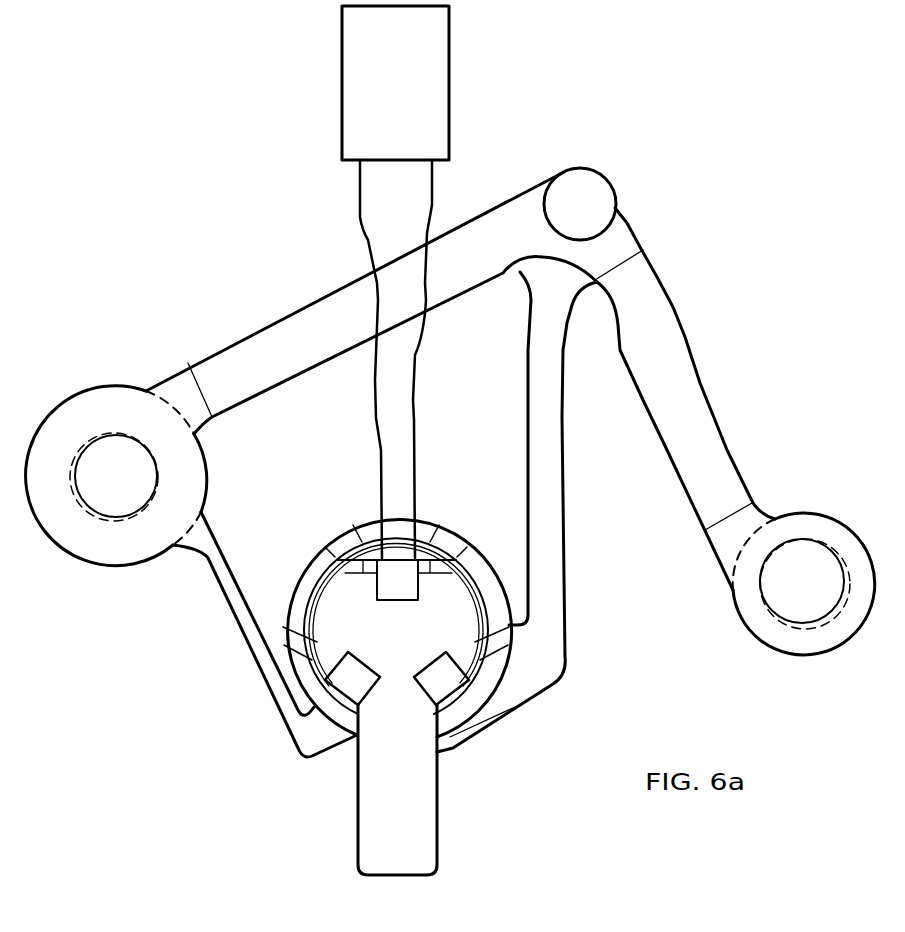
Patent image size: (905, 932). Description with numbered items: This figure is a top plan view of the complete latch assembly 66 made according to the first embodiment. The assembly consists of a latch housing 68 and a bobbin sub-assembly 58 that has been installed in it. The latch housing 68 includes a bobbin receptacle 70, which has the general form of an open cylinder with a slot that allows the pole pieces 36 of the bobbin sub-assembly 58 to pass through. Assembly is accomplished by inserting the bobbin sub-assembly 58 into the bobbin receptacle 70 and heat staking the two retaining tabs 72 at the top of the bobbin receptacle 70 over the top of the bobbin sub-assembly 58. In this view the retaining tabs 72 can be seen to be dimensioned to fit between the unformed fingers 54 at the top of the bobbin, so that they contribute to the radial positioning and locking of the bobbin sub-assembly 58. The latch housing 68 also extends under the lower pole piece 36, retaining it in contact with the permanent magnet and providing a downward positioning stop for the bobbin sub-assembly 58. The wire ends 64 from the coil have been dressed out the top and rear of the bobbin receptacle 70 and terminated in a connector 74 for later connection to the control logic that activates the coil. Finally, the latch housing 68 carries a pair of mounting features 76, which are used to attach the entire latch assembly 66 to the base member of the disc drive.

The pole piece 36 is at (377, 780).
The unformed fingers 54 is at (355, 540).
The bobbin sub-assembly 58 is at (480, 756).
The wire ends 64 is at (428, 222).
The latch assembly 66 is at (175, 235).
The latch housing 68 is at (262, 338).
The bobbin receptacle 70 is at (320, 698).
The retaining tabs 72 is at (280, 576).
The connector 74 is at (438, 72).
The mounting features 76 is at (82, 405).